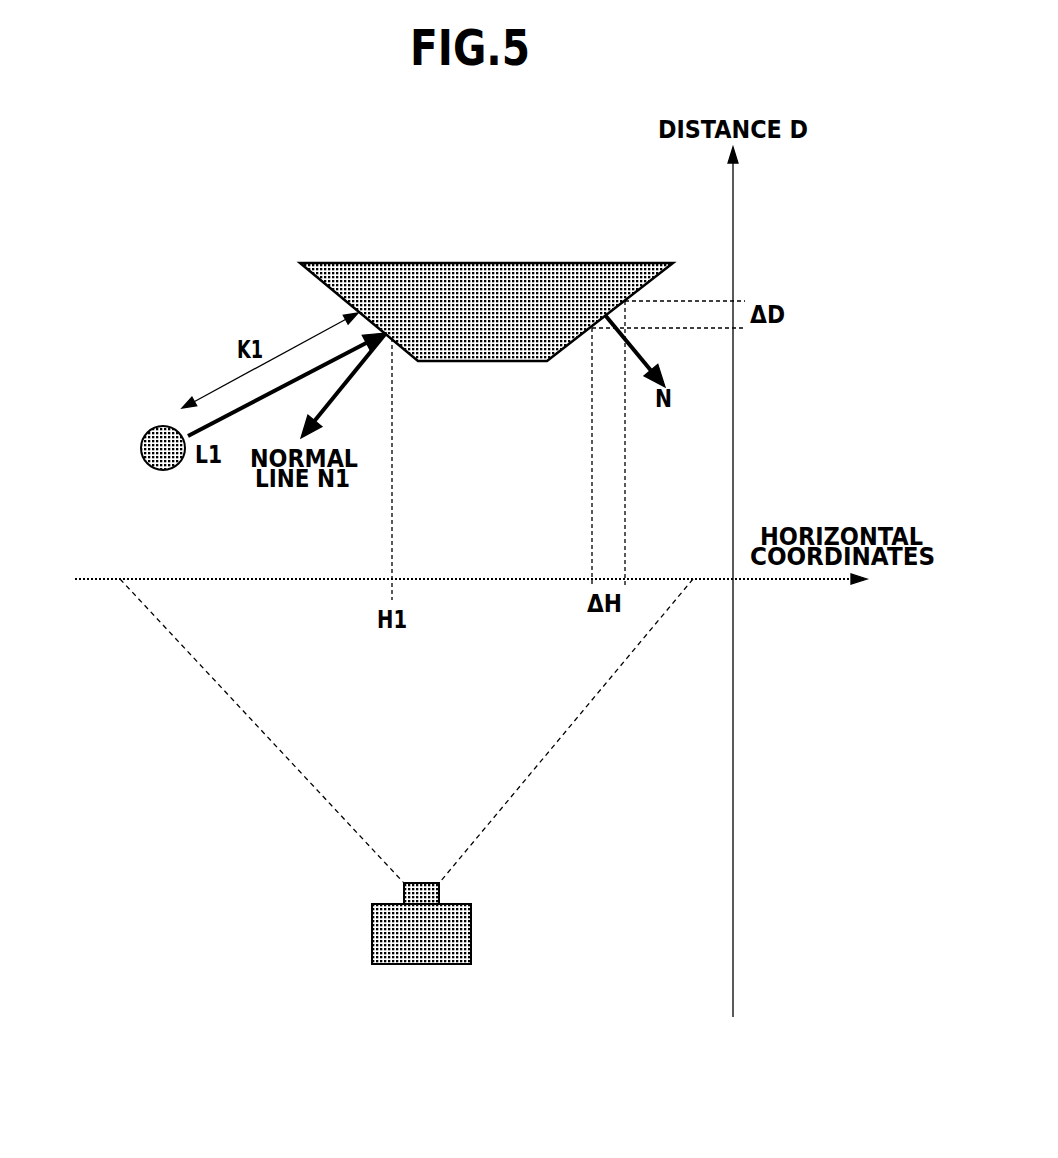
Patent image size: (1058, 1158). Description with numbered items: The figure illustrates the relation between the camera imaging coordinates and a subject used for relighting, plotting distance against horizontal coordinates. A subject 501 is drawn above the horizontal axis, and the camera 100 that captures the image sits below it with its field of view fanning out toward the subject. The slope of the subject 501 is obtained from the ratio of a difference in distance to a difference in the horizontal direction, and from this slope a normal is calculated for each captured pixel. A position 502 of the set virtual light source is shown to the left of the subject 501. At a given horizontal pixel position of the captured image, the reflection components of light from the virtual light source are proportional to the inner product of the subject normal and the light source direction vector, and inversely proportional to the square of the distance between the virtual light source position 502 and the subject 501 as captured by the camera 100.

The subject 501 is at (488, 262).
The position of a set virtual light source 502 is at (145, 464).
The camera 100 is at (472, 930).